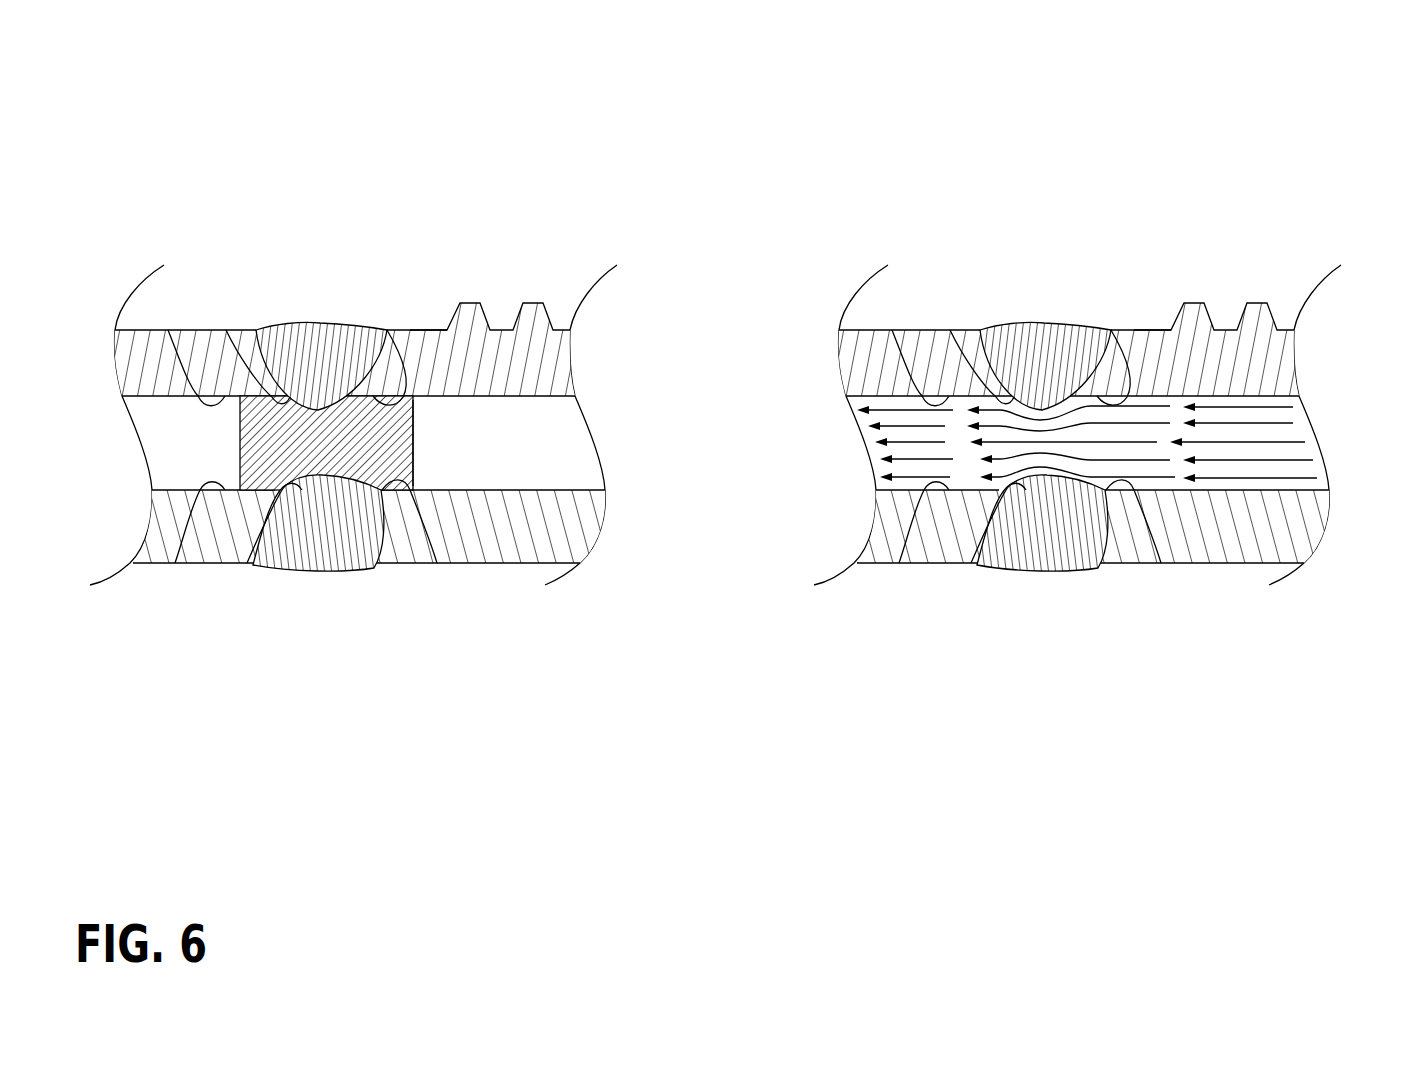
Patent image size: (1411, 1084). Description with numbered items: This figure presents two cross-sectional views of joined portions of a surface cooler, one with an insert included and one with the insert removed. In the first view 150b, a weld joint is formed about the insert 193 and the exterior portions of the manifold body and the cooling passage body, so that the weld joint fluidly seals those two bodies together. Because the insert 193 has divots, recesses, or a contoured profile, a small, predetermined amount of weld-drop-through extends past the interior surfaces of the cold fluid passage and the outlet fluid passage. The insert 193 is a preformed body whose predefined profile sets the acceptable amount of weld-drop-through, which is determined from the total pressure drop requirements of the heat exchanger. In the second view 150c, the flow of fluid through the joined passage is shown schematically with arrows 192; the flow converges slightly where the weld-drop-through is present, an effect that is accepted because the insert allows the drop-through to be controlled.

The first view 150b is at (362, 63).
The second view 150c is at (1086, 63).
The arrows 192 is at (1298, 481).
The insert 193 is at (395, 442).